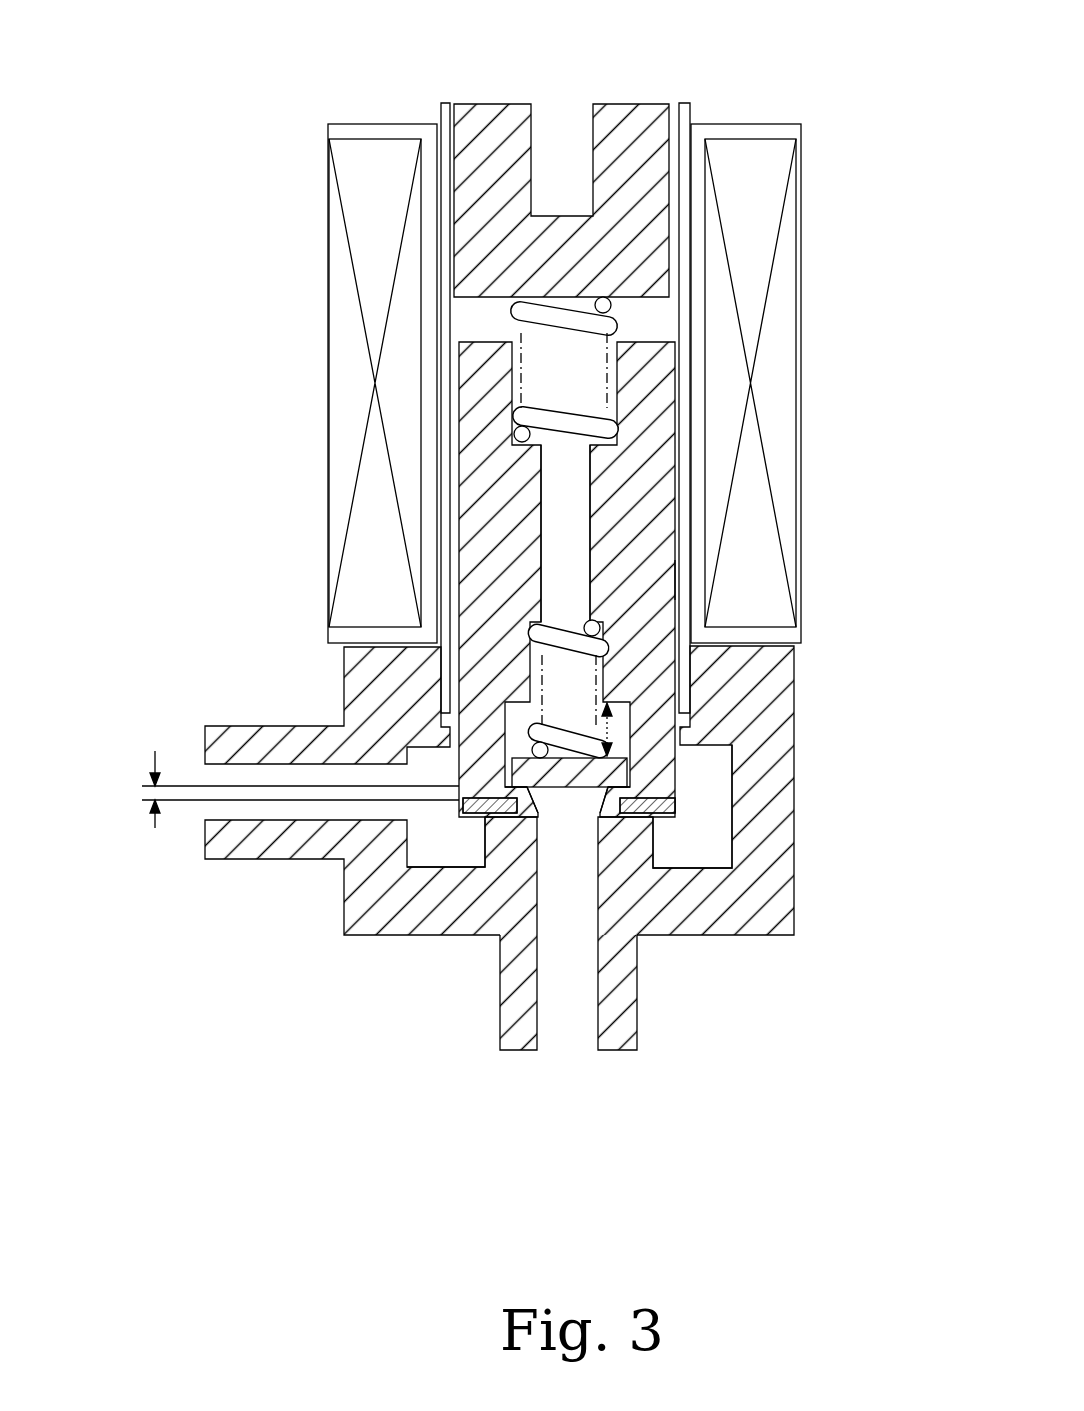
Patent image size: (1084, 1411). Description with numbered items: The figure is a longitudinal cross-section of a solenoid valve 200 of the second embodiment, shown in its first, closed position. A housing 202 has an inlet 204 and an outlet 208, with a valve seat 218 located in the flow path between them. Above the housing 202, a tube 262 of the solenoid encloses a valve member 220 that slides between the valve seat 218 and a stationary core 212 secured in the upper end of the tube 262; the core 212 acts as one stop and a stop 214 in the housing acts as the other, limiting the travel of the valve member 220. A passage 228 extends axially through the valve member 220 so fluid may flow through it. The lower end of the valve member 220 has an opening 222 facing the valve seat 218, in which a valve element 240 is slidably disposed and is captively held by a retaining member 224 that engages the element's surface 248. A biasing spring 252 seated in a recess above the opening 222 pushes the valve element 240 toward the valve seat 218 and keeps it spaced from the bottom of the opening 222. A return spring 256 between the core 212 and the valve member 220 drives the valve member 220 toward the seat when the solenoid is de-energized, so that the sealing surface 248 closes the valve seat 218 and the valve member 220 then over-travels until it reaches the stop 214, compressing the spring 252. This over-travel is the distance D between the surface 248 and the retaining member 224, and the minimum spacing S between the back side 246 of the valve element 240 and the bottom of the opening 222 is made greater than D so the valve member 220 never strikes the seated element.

The valve 200 is at (338, 1078).
The housing 202 is at (370, 908).
The inlet 204 is at (205, 810).
The outlet 208 is at (568, 1040).
The core 212 is at (500, 115).
The stop 214 is at (472, 832).
The valve seat 218 is at (540, 792).
The valve member 220 is at (463, 457).
The opening 222 is at (510, 705).
The retaining member 224 is at (668, 820).
The passage 228 is at (549, 528).
The valve element 240 is at (632, 760).
The back side 246 is at (630, 703).
The sealing surface 248 is at (632, 786).
The spring 252 is at (677, 583).
The return spring 256 is at (622, 420).
The tube 262 is at (684, 106).
The over-travel distance D is at (155, 751).
The minimum spacing S is at (612, 728).